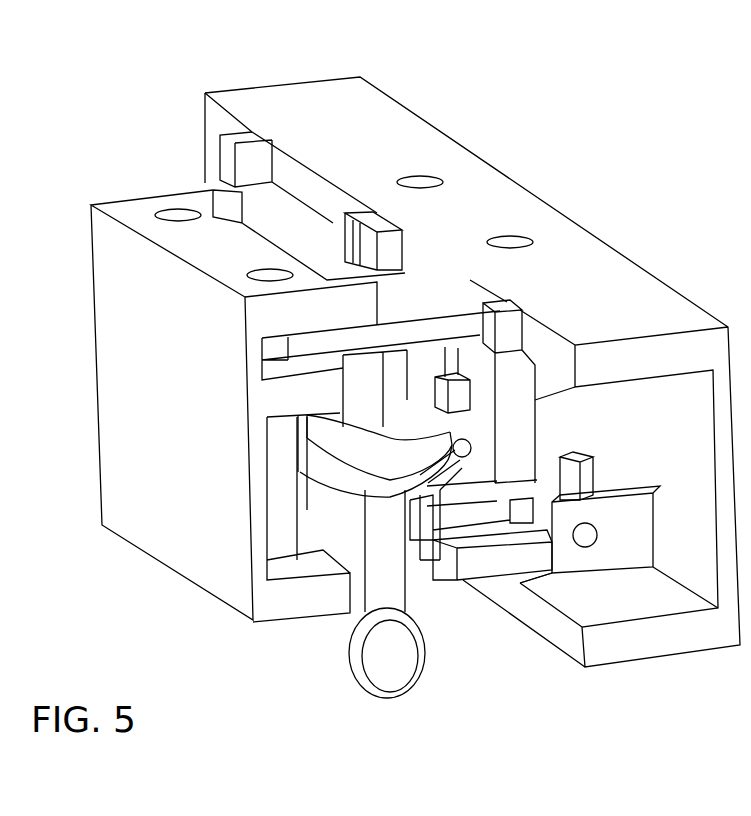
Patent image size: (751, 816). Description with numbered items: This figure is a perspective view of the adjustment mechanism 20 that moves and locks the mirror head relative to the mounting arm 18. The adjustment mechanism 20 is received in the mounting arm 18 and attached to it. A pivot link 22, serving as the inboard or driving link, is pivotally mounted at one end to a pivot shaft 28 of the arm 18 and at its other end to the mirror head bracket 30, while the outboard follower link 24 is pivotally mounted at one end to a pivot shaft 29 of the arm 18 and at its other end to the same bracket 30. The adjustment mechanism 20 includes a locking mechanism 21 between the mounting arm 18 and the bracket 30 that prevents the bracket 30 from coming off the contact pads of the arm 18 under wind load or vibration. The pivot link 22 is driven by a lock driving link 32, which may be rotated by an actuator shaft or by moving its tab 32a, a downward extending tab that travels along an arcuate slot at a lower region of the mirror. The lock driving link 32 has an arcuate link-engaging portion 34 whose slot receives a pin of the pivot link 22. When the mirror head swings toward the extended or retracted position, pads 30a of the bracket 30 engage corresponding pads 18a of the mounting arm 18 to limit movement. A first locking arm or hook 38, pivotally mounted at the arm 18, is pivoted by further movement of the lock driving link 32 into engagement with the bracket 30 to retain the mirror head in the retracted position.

The mounting arm 18 is at (537, 188).
The tabs or protrusions or pads of the mounting arm 18a is at (250, 163).
The adjustment mechanism 20 is at (385, 168).
The locking mechanism 21 is at (447, 660).
The pivot link 22 is at (413, 323).
The follower link 24 is at (300, 242).
The pivot shaft 28 is at (518, 408).
The pivot shaft 29 is at (422, 182).
The mirror head bracket 30 is at (112, 545).
The tabs or protrusions or pads of the mirror head bracket 30a is at (345, 280).
The lock driving link 32 is at (348, 633).
The tab of the lock driving link 32a is at (385, 662).
The link-engaging portion 34 is at (353, 467).
The first locking arm or hook 38 is at (500, 592).